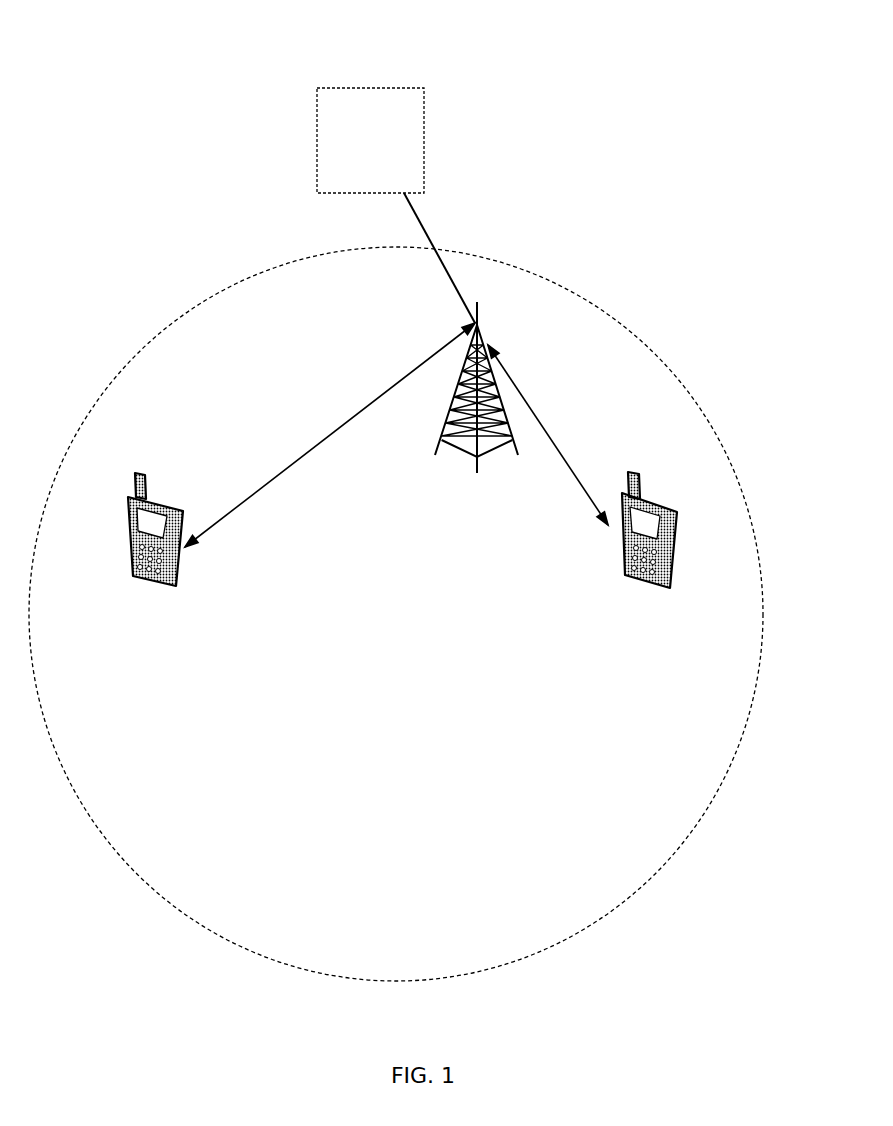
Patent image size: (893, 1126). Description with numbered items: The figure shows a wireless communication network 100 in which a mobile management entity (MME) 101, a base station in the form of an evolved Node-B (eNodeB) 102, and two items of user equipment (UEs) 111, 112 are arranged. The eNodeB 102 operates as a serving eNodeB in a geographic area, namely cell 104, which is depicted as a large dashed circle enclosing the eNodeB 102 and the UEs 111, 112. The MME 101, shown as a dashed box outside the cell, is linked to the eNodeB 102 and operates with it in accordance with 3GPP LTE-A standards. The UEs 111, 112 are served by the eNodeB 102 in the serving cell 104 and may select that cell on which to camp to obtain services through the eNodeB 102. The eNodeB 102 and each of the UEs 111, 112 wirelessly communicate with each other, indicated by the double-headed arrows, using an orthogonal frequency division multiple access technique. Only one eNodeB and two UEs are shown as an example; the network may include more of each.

The wireless communication network 100 is at (707, 100).
The mobile management entity (MME) 101 is at (407, 87).
The evolved Node-B (eNodeB) 102 is at (490, 350).
The cell 104 is at (640, 340).
The user equipment (UE) 111 is at (176, 500).
The user equipment (UE) 112 is at (677, 515).